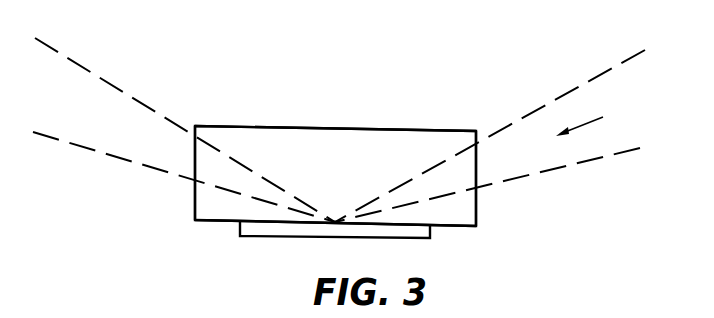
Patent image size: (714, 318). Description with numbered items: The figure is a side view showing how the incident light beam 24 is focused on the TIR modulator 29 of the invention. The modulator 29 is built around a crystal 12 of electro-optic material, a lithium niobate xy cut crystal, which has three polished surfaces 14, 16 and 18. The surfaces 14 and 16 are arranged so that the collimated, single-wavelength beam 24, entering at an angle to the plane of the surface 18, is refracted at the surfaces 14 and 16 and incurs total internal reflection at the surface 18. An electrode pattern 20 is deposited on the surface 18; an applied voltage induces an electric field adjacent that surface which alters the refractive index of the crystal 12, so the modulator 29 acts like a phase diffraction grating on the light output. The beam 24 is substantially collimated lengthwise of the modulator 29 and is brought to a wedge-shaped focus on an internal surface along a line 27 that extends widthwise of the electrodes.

The crystal 12 is at (302, 142).
The polished surface 14 is at (195, 163).
The polished surface 16 is at (477, 165).
The polished surface 18 is at (222, 223).
The electrode pattern 20 is at (295, 237).
The incident light beam 24 is at (585, 118).
The line 27 is at (337, 220).
The TIR modulator 29 is at (416, 122).